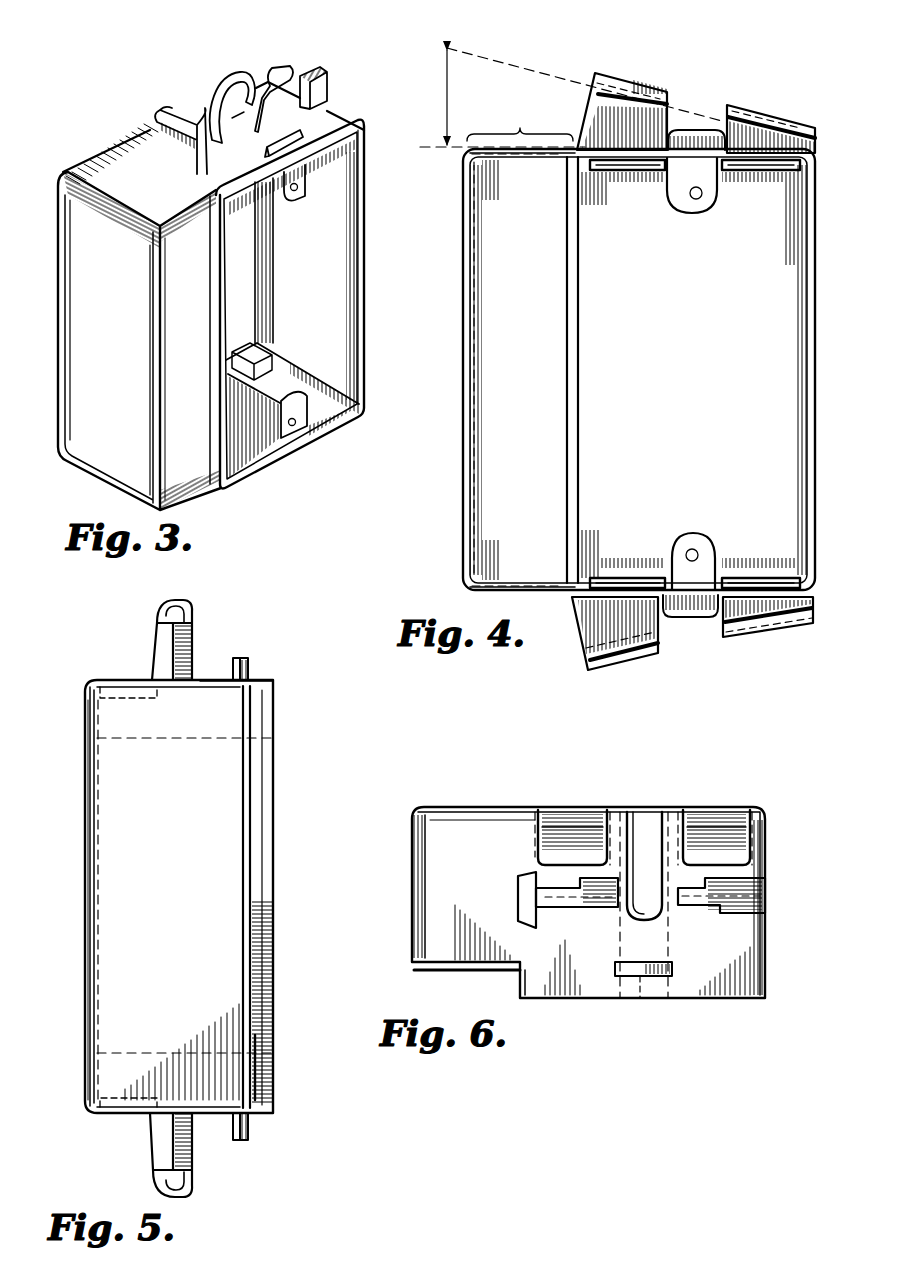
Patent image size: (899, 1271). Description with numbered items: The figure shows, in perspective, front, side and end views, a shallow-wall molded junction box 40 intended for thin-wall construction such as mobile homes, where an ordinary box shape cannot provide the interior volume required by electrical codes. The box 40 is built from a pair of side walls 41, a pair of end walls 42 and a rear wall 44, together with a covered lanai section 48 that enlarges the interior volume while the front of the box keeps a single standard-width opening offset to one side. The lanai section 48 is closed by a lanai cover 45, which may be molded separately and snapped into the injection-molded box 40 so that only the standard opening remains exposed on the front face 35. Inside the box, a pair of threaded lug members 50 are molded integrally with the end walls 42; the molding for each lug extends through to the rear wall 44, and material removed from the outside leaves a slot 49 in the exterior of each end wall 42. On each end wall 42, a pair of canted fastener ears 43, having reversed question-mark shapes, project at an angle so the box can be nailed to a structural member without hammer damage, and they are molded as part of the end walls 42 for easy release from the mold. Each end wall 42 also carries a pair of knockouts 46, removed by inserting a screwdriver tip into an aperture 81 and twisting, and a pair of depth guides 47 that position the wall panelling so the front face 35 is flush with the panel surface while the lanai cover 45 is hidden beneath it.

In FIG. 3, the front face 35 is at (366, 224).
In FIG. 4, the front face 35 is at (570, 412).
In FIG. 3, the shallow-wall molded junction box 40 is at (95, 124).
In FIG. 4, the shallow-wall molded junction box 40 is at (440, 548).
In FIG. 5, the shallow-wall molded junction box 40 is at (80, 880).
In FIG. 6, the shallow-wall molded junction box 40 is at (438, 802).
In FIG. 3, the side walls 41 is at (379, 270).
In FIG. 5, the side walls 41 is at (174, 877).
In FIG. 6, the side walls 41 is at (411, 883).
In FIG. 3, the end walls 42 is at (213, 133).
In FIG. 4, the end walls 42 is at (523, 147).
In FIG. 5, the end walls 42 is at (207, 682).
In FIG. 6, the end walls 42 is at (579, 933).
In FIG. 3, the canted fastener ears 43 is at (203, 118).
In FIG. 4, the canted fastener ears 43 is at (627, 82).
In FIG. 5, the canted fastener ears 43 is at (186, 624).
In FIG. 6, the canted fastener ears 43 is at (553, 895).
In FIG. 3, the rear wall 44 is at (243, 283).
In FIG. 4, the rear wall 44 is at (693, 371).
In FIG. 5, the rear wall 44 is at (86, 978).
In FIG. 6, the rear wall 44 is at (517, 807).
In FIG. 3, the lanai cover 45 is at (188, 345).
In FIG. 4, the lanai cover 45 is at (515, 370).
In FIG. 5, the lanai cover 45 is at (248, 793).
In FIG. 6, the lanai cover 45 is at (453, 973).
In FIG. 3, the knockouts 46 is at (170, 128).
In FIG. 4, the knockouts 46 is at (627, 170).
In FIG. 5, the knockouts 46 is at (117, 692).
In FIG. 6, the knockouts 46 is at (580, 840).
In FIG. 3, the depth guides 47 is at (297, 147).
In FIG. 4, the depth guides 47 is at (693, 136).
In FIG. 5, the depth guides 47 is at (252, 663).
In FIG. 6, the depth guides 47 is at (647, 975).
In FIG. 3, the lanai section 48 is at (188, 485).
In FIG. 4, the lanai section 48 is at (520, 121).
In FIG. 3, the slot 49 is at (250, 126).
In FIG. 6, the slot 49 is at (647, 835).
In FIG. 3, the threaded lug members 50 is at (293, 203).
In FIG. 4, the threaded lug members 50 is at (702, 203).
In FIG. 6, the threaded lug members 50 is at (662, 987).
In FIG. 4, the aperture 81 is at (660, 168).